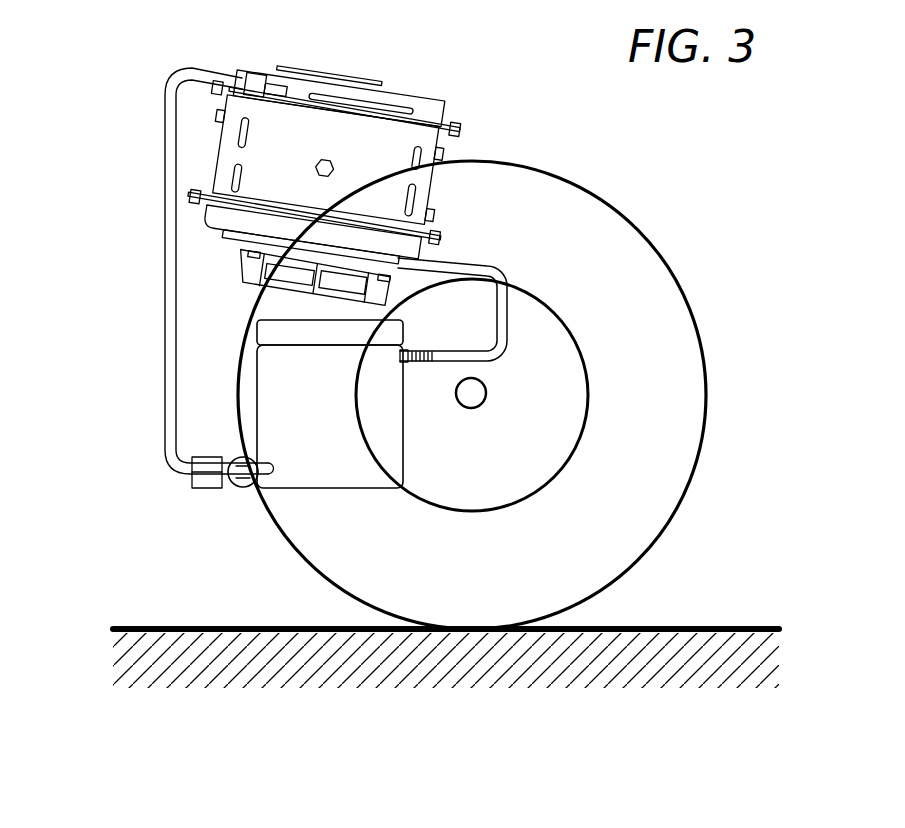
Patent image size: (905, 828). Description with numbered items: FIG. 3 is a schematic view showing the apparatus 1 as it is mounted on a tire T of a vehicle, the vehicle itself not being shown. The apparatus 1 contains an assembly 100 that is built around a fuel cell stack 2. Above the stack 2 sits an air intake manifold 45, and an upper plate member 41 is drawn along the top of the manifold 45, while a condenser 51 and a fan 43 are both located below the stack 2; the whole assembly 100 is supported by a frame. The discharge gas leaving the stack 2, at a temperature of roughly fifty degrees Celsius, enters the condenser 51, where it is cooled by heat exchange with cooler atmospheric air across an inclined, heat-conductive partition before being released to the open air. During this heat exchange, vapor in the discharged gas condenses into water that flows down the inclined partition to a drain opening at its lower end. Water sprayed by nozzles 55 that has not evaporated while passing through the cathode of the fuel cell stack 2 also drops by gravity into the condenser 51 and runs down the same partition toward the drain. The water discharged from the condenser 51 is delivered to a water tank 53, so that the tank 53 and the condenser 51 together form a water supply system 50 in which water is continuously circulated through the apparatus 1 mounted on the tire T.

The assembly 100 is at (492, 58).
The apparatus 1 is at (130, 66).
The fuel cell stack 2 is at (418, 178).
The upper plate 41 is at (322, 74).
The air intake manifold 45 is at (400, 96).
The nozzles 55 is at (256, 80).
The condenser 51 is at (240, 251).
The fan 43 is at (237, 268).
The water supply system 50 is at (130, 392).
The water tank 53 is at (407, 461).
The tire T is at (643, 238).